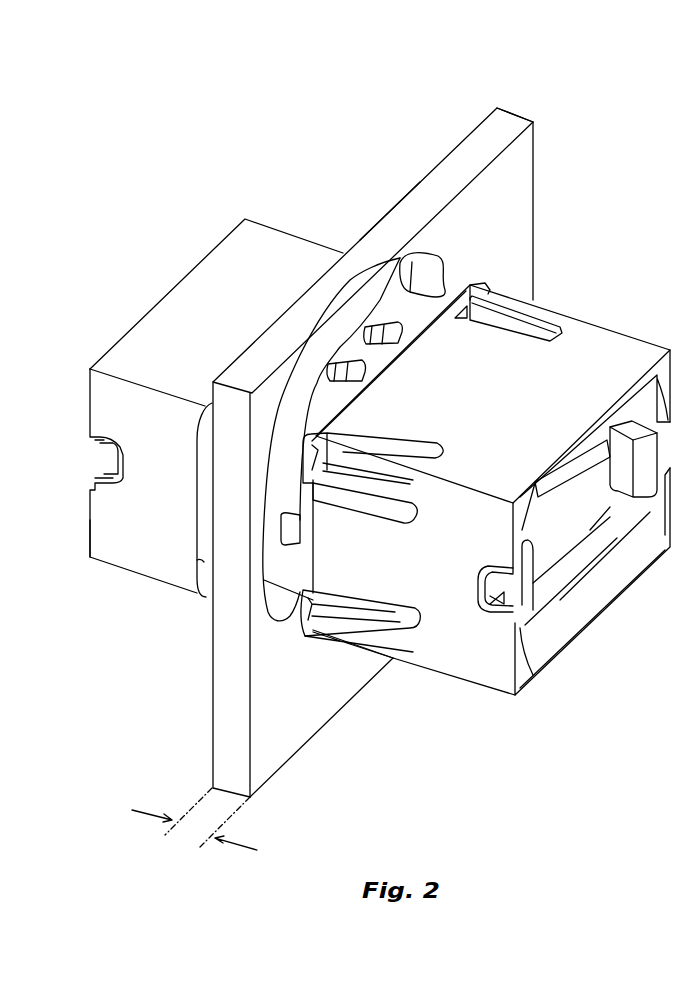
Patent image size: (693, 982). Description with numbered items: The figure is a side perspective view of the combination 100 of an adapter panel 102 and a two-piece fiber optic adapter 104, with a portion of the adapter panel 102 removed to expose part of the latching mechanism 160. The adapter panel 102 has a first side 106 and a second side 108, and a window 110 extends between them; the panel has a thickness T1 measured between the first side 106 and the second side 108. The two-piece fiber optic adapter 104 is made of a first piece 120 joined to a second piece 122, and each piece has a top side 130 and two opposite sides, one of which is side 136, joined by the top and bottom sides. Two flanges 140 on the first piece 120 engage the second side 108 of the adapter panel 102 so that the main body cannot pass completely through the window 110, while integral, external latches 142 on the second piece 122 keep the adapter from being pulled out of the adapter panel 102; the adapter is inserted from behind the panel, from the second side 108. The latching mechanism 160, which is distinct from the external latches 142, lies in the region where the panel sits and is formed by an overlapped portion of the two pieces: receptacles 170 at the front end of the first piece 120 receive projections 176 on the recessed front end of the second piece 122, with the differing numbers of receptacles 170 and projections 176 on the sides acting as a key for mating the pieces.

The combination 100 is at (576, 97).
The adapter panel 102 is at (534, 232).
The two-piece fiber optic adapter 104 is at (650, 303).
The first side 106 is at (517, 173).
The second side 108 is at (380, 217).
The window 110 is at (318, 637).
The first piece 120 is at (108, 567).
The second piece 122 is at (530, 680).
The top side 130 is at (208, 272).
The side 136 is at (97, 525).
The flange 140 is at (196, 576).
The external latch 142 is at (347, 452).
The latching mechanism 160 is at (327, 397).
The receptacle 170 is at (395, 325).
The projection 176 is at (355, 358).
The thickness T1 is at (192, 819).